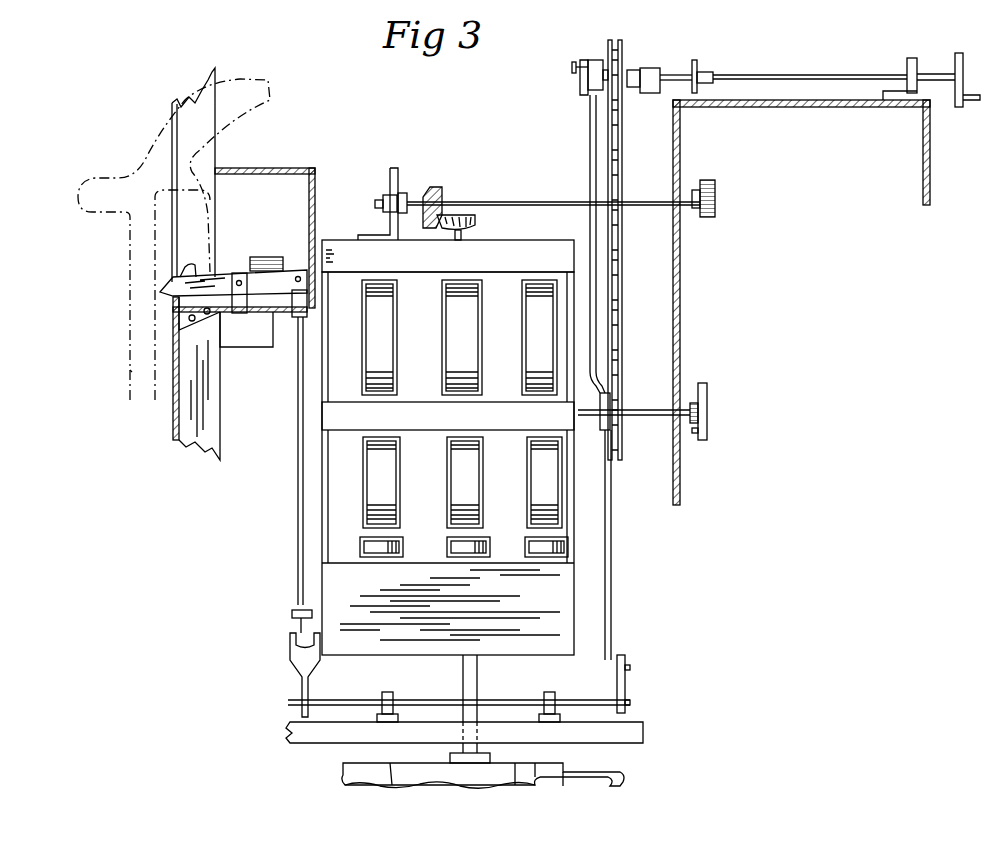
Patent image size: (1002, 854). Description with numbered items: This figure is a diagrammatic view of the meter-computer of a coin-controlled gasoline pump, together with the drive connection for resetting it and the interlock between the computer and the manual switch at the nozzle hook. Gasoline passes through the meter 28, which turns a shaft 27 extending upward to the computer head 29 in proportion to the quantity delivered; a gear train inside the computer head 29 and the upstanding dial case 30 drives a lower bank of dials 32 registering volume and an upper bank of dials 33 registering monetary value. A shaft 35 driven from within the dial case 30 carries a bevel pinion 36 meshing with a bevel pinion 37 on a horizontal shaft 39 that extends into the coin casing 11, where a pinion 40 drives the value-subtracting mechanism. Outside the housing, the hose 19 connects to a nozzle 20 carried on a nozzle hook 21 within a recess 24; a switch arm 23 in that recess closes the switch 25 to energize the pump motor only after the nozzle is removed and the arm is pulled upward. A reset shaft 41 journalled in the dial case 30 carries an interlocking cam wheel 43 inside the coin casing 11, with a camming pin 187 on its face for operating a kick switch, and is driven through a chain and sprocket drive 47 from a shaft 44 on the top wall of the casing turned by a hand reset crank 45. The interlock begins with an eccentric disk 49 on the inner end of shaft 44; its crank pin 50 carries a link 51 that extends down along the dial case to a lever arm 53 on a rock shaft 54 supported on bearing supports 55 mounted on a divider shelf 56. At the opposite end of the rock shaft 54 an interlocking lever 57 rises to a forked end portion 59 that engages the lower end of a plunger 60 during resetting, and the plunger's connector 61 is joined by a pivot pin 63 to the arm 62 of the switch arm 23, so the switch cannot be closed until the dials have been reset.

The coin casing 11 is at (784, 101).
The hose 19 is at (133, 372).
The nozzle 20 is at (88, 202).
The nozzle hook 21 is at (193, 268).
The switch arm 23 is at (165, 296).
The recess 24 is at (263, 201).
The switch 25 is at (268, 258).
The shaft 27 is at (464, 676).
The meter 28 is at (345, 772).
The computer head 29 is at (578, 585).
The dial case 30 is at (519, 248).
The lower bank of dials 32 is at (534, 465).
The upper bank of dials 33 is at (533, 318).
The shaft 35 is at (462, 236).
The bevel pinion 36 is at (475, 221).
The bevel pinion 37 is at (437, 186).
The shaft 39 is at (548, 203).
The pinion 40 is at (709, 181).
The reset shaft 41 is at (642, 411).
The interlocking cam wheel 43 is at (707, 396).
The shaft 44 is at (754, 75).
The reset crank 45 is at (976, 101).
The chain and sprocket drive 47 is at (622, 165).
The eccentric disk 49 is at (596, 60).
The crank pin 50 is at (571, 66).
The link 51 is at (590, 124).
The lever arm 53 is at (626, 687).
The rock shaft 54 is at (511, 700).
The bearing supports 55 is at (391, 696).
The divider shelf 56 is at (648, 730).
The interlocking lever 57 is at (290, 655).
The forked end portion 59 is at (291, 614).
The plunger 60 is at (299, 422).
The connector 61 is at (295, 318).
The arm 62 is at (270, 300).
The pivot pin 63 is at (297, 275).
The camming pin 187 is at (697, 434).